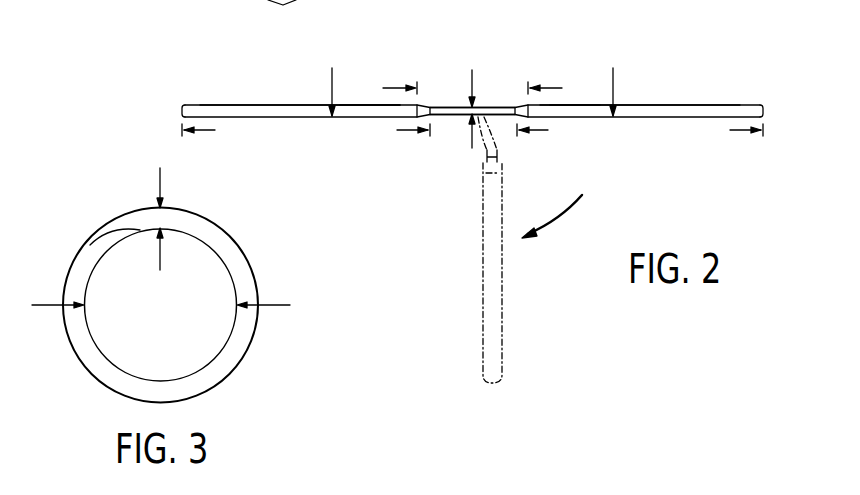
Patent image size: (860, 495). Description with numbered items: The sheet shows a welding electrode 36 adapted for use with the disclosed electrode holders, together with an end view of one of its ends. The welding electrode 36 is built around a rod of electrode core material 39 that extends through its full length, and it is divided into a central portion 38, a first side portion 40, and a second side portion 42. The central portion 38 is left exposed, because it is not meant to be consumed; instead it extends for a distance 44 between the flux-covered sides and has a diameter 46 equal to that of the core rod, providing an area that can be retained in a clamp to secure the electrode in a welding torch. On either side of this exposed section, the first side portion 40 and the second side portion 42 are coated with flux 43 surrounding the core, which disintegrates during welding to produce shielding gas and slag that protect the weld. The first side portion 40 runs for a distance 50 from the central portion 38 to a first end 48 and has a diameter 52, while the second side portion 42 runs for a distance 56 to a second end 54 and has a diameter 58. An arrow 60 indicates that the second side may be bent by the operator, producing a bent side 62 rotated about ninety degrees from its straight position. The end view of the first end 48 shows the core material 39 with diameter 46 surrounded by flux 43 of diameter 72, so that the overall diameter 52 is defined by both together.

In FIG. 2, the welding electrode 36 is at (660, 52).
In FIG. 2, the central portion 38 is at (450, 119).
In FIG. 2, the electrode core material 39 is at (447, 99).
In FIG. 3, the electrode core material 39 is at (208, 267).
In FIG. 2, the first side portion 40 is at (273, 104).
In FIG. 2, the second side portion 42 is at (678, 106).
In FIG. 2, the flux 43 is at (365, 98).
In FIG. 3, the flux 43 is at (103, 238).
In FIG. 2, the distance 44 is at (388, 88).
In FIG. 2, the diameter 46 is at (474, 72).
In FIG. 3, the diameter 46 is at (265, 305).
In FIG. 2, the first end 48 is at (190, 104).
In FIG. 3, the first end 48 is at (216, 204).
In FIG. 2, the distance 50 is at (412, 132).
In FIG. 2, the diameter 52 is at (332, 71).
In FIG. 2, the second end 54 is at (762, 107).
In FIG. 2, the distance 56 is at (538, 132).
In FIG. 2, the diameter 58 is at (615, 72).
In FIG. 2, the arrow 60 is at (560, 218).
In FIG. 2, the bent side 62 is at (483, 277).
In FIG. 3, the diameter 72 is at (158, 178).